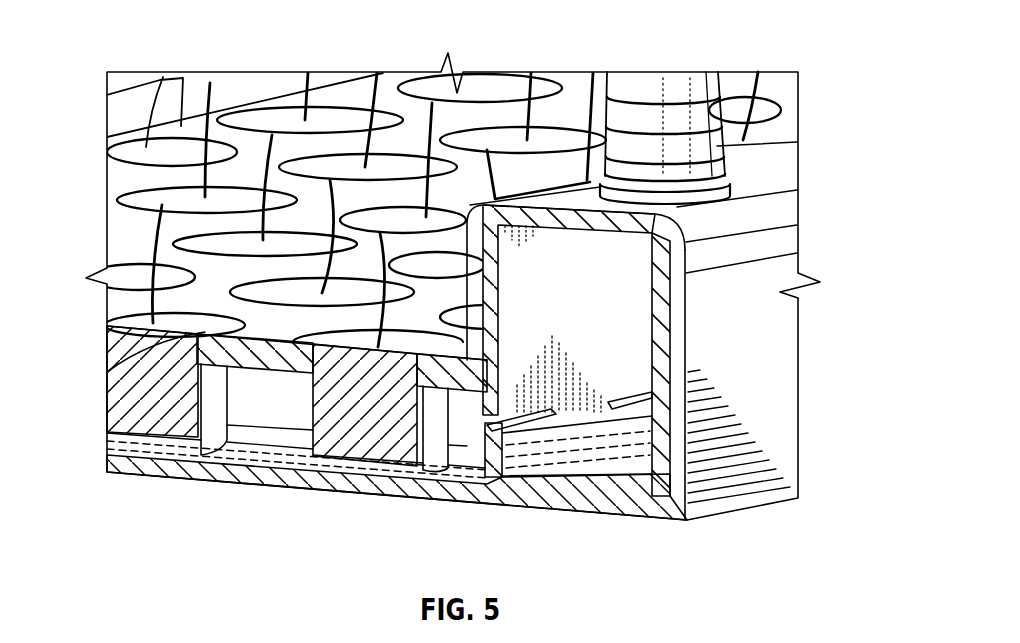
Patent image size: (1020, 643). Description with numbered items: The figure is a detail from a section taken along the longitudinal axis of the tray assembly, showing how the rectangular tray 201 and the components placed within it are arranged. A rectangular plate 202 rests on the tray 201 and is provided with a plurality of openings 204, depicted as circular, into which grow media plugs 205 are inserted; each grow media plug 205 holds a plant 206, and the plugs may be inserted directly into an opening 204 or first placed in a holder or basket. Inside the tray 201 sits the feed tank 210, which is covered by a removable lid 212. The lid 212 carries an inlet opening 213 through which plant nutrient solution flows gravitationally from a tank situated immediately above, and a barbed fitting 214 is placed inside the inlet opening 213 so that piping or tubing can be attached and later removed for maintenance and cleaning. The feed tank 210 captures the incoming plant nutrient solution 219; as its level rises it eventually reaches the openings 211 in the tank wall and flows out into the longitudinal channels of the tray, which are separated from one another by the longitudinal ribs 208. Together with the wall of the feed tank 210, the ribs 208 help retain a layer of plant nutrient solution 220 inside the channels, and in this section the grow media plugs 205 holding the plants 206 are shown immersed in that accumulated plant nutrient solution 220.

The rectangular tray 201 is at (792, 460).
The rectangular plate 202 is at (575, 83).
The opening 204 is at (110, 372).
The grow media plug 205 is at (167, 408).
The plant 206 is at (110, 250).
The longitudinal rib 208 is at (270, 397).
The feed tank 210 is at (618, 353).
The opening 211 is at (510, 428).
The removable lid 212 is at (770, 217).
The inlet opening 213 is at (737, 188).
The fitting 214 is at (770, 105).
The plant nutrient solution 219 is at (610, 470).
The plant nutrient solution 220 is at (458, 470).